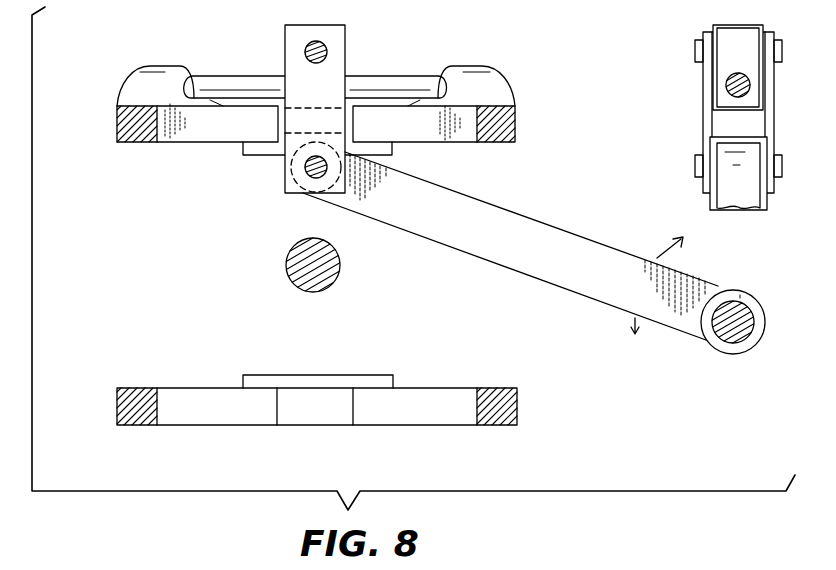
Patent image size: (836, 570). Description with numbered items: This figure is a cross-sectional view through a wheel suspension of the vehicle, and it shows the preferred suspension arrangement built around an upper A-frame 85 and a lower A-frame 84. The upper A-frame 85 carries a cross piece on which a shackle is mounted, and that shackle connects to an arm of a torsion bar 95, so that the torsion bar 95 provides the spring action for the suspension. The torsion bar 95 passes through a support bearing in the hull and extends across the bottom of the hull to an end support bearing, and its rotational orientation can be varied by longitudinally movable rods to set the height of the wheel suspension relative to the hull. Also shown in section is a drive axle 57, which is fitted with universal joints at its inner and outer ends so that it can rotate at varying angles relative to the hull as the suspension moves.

The drive axle 57 is at (285, 267).
The lower A-frame 84 is at (445, 387).
The upper A-frame 85 is at (209, 134).
The torsion bar 95 is at (717, 336).